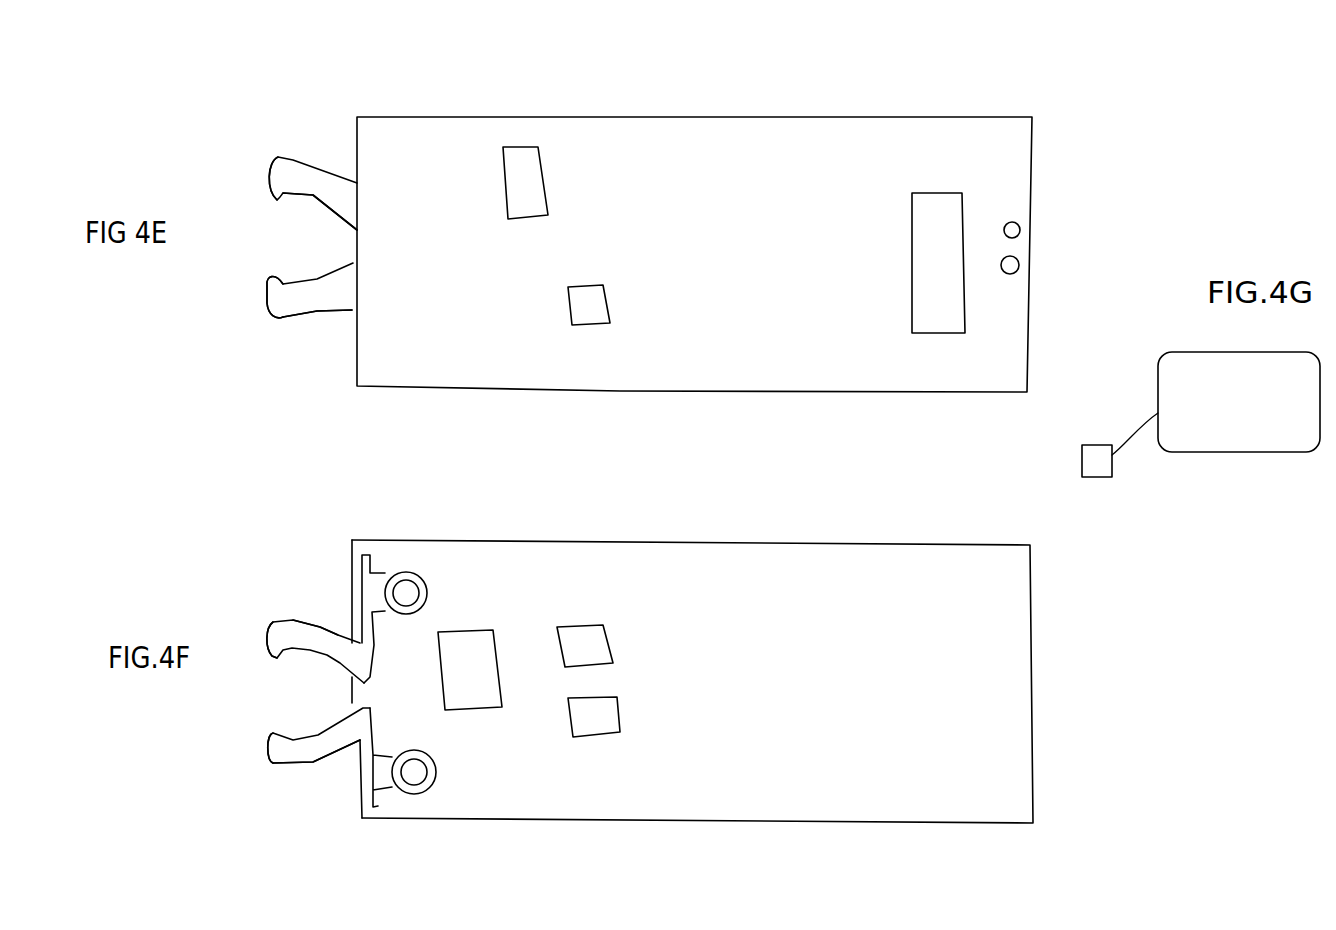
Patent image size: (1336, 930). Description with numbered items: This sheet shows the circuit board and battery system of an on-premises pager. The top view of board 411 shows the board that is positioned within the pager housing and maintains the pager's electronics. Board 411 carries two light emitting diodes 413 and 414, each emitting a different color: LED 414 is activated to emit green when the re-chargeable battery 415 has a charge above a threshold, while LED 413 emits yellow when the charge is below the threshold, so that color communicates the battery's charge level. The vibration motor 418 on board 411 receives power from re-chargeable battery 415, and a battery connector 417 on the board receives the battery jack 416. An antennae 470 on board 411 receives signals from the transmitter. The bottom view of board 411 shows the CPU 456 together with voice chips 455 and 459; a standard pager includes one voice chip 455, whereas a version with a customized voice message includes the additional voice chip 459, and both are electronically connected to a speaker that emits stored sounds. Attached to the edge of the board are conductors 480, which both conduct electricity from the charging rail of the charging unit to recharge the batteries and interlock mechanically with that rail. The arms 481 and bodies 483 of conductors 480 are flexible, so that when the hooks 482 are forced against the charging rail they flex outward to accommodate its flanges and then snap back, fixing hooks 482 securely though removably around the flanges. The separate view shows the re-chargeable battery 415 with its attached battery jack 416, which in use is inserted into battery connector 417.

In FIG. 4E, the board 411 is at (710, 127).
In FIG. 4F, the board 411 is at (715, 552).
In FIG. 4E, the light emitting diode 413 is at (1020, 226).
In FIG. 4E, the light emitting diode 414 is at (1016, 270).
In FIG. 4G, the re-chargeable battery 415 is at (1223, 455).
In FIG. 4G, the battery jack 416 is at (1092, 477).
In FIG. 4E, the battery connector 417 is at (585, 325).
In FIG. 4E, the vibration motor 418 is at (521, 147).
In FIG. 4E, the antennae 470 is at (933, 202).
In FIG. 4F, the voice chip 455 is at (602, 735).
In FIG. 4F, the CPU 456 is at (465, 712).
In FIG. 4F, the voice chip 459 is at (614, 642).
In FIG. 4E, the conductor 480 is at (278, 157).
In FIG. 4F, the conductor 480 is at (277, 623).
In FIG. 4F, the arm 481 is at (368, 620).
In FIG. 4E, the hook 482 is at (272, 183).
In FIG. 4F, the hook 482 is at (272, 652).
In FIG. 4E, the body 483 is at (313, 198).
In FIG. 4F, the body 483 is at (296, 635).